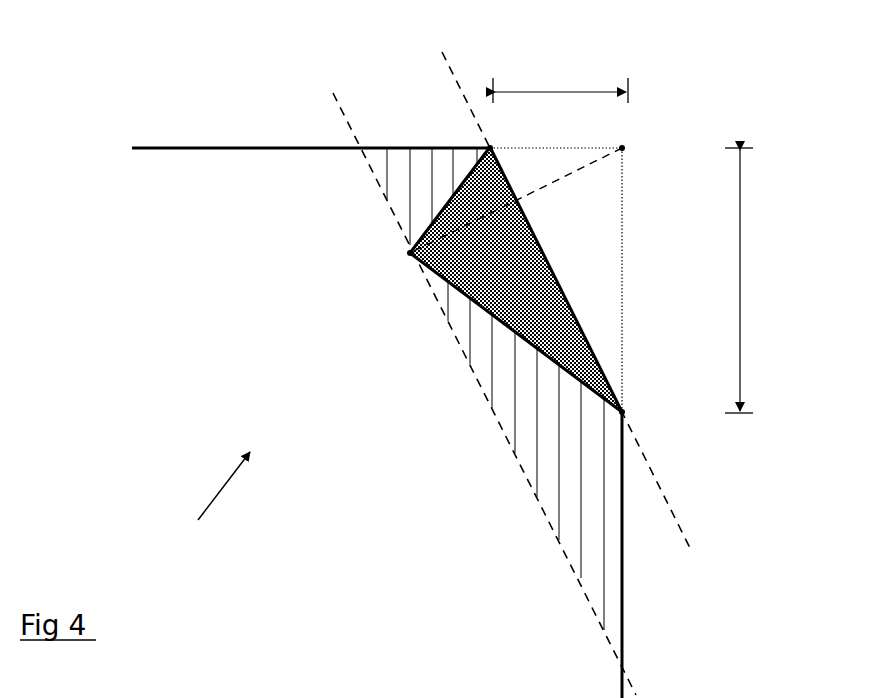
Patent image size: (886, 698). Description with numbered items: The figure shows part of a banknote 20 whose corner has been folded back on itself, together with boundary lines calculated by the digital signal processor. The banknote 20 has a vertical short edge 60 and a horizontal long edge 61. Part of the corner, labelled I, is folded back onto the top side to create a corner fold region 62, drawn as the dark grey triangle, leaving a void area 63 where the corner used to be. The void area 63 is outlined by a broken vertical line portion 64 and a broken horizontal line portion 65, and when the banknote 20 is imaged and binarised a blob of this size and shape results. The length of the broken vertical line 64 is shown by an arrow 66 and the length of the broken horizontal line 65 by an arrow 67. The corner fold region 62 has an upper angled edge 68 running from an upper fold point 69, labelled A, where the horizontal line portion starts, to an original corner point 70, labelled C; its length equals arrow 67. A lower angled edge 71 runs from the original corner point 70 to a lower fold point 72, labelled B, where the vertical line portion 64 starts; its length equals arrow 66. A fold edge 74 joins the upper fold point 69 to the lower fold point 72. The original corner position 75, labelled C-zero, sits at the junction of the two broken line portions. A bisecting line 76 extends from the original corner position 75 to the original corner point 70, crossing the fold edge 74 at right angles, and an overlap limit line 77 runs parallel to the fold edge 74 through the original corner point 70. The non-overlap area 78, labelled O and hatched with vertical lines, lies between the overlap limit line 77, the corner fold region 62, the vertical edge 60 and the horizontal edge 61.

The banknote 20 is at (205, 507).
The vertical edge 60 is at (624, 508).
The horizontal edge 61 is at (250, 147).
The corner fold region 62 is at (563, 292).
The void area 63 is at (600, 252).
The broken vertical line portion 64 is at (622, 322).
The broken horizontal line portion 65 is at (601, 140).
The arrow 66 is at (742, 264).
The arrow 67 is at (563, 90).
The upper angled edge 68 is at (465, 178).
The upper fold point 69 is at (483, 138).
The original corner point 70 is at (406, 258).
The lower angled edge 71 is at (487, 306).
The lower fold point 72 is at (624, 415).
The fold edge 74 is at (537, 230).
The original corner position 75 is at (624, 151).
The bisecting line 76 is at (547, 183).
The overlap limit line 77 is at (373, 183).
The non-overlap area 78 is at (500, 387).